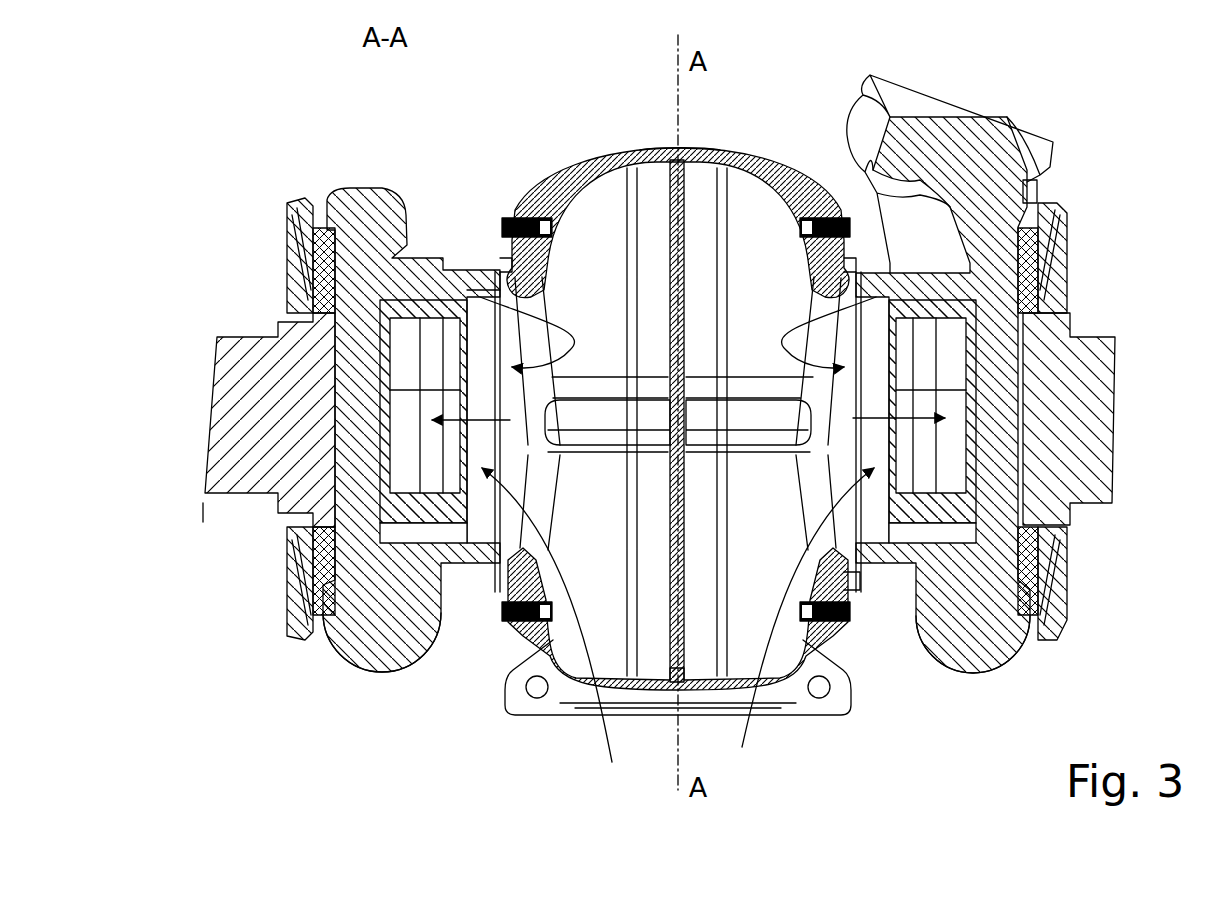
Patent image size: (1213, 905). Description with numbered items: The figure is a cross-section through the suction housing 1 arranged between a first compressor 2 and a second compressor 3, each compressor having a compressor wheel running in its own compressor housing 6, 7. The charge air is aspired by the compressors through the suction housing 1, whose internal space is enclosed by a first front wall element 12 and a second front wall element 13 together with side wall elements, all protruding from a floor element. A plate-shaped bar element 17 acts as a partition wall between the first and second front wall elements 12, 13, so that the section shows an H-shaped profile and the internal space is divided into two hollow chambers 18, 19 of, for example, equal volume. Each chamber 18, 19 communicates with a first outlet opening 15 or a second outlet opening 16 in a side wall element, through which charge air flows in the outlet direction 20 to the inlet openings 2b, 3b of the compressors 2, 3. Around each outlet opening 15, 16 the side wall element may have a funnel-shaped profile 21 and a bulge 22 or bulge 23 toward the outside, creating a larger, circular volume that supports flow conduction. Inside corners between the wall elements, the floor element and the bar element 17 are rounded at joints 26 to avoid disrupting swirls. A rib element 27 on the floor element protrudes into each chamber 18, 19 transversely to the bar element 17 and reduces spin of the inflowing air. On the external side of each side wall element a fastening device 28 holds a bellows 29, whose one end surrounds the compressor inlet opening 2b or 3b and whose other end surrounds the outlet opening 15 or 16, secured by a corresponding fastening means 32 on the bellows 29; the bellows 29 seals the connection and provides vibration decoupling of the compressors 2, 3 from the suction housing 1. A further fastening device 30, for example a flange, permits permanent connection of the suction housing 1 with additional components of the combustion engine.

The suction housing 1 is at (618, 150).
The first compressor 2 is at (1000, 128).
The second compressor 3 is at (370, 192).
The compressor housing 6 is at (965, 671).
The compressor housing 7 is at (395, 671).
The first front wall element 12 is at (623, 620).
The second front wall element 13 is at (661, 148).
The first outlet opening 15 is at (835, 315).
The second outlet opening 16 is at (505, 305).
The bar element 17 is at (686, 215).
The chamber 18 is at (747, 232).
The chamber 19 is at (588, 222).
The outlet direction 20 is at (470, 432).
The funnel-shaped profile 21 is at (830, 282).
The bulge 22 is at (503, 262).
The bulge 23 is at (500, 292).
The joint 26 is at (572, 160).
The rib element 27 is at (593, 420).
The fastening device 28 is at (818, 205).
The bellows 29 is at (863, 580).
The fastening device 30 is at (562, 703).
The fastening means 32 is at (503, 215).
The inlet opening 2b is at (803, 634).
The inlet opening 3b is at (549, 639).